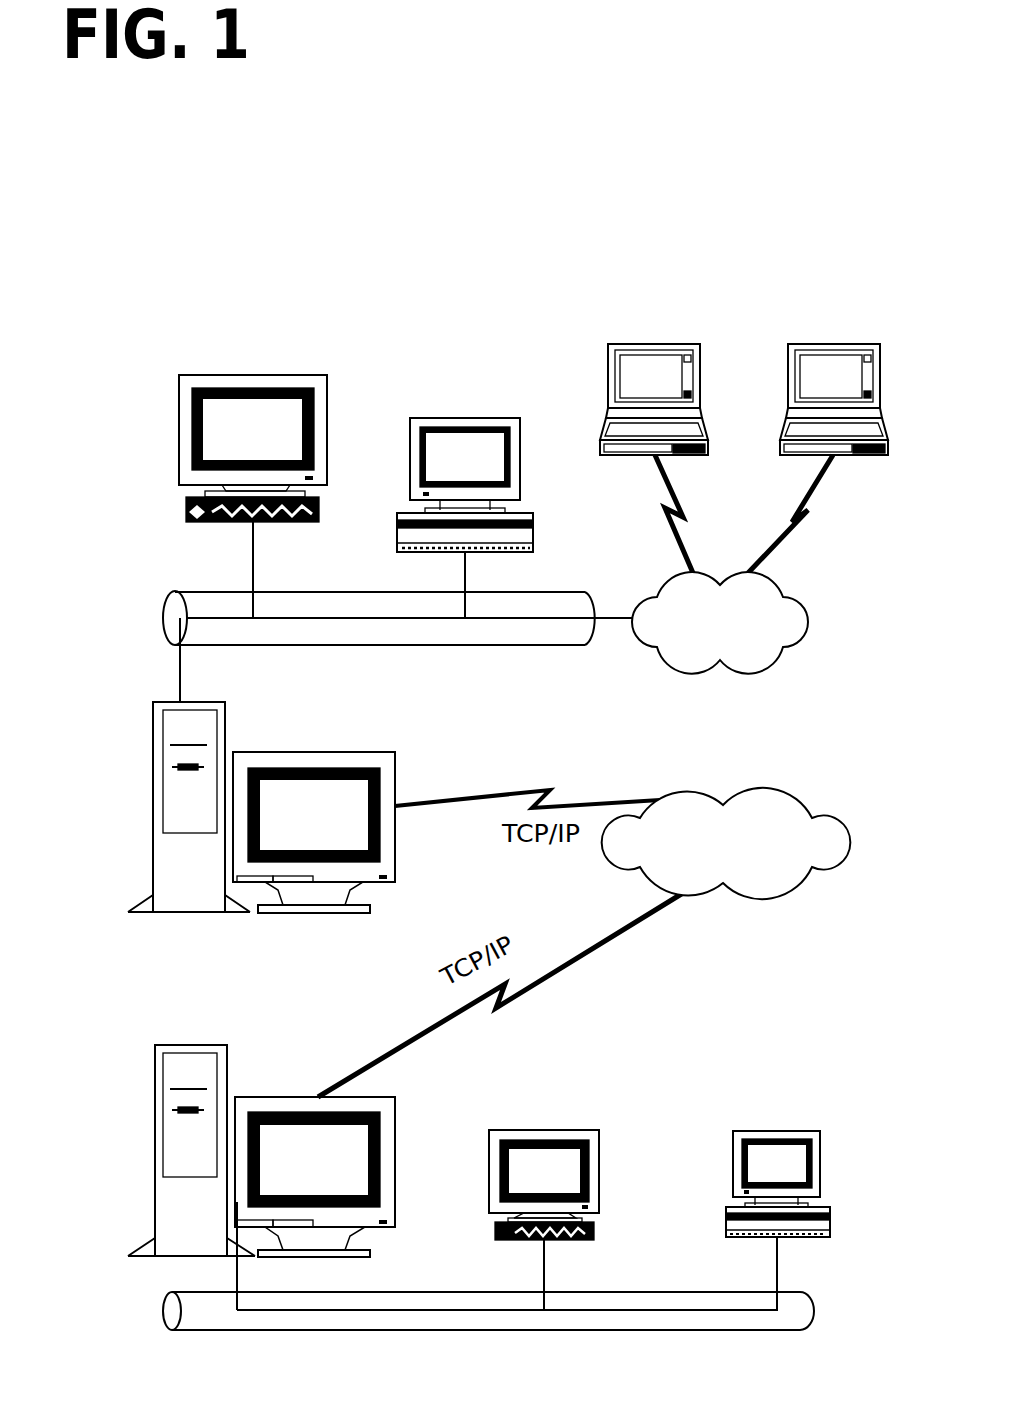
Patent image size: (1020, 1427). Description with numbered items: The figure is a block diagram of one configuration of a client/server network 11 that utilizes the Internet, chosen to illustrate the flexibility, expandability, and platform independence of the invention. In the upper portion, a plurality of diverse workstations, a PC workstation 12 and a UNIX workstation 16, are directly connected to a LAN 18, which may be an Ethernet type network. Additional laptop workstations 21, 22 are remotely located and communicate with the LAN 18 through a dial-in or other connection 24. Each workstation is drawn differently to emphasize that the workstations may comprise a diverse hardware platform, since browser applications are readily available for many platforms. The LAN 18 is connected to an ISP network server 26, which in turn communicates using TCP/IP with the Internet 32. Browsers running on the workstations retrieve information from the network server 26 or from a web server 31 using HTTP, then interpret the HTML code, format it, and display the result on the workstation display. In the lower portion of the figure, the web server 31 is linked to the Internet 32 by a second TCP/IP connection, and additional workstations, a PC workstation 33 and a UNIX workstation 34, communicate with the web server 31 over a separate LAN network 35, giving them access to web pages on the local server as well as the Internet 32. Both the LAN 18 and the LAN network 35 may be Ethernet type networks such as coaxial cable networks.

The network 11 is at (598, 238).
The workstation 12 is at (177, 447).
The workstation 16 is at (533, 520).
The workstation 21 is at (702, 398).
The workstation 22 is at (788, 400).
The dial-in connection 24 is at (695, 672).
The LAN 18 is at (417, 640).
The network server 26 is at (226, 693).
The Internet 32 is at (758, 795).
The web server 31 is at (253, 1095).
The workstation 33 is at (600, 1167).
The workstation 34 is at (737, 1188).
The LAN network 35 is at (733, 1290).